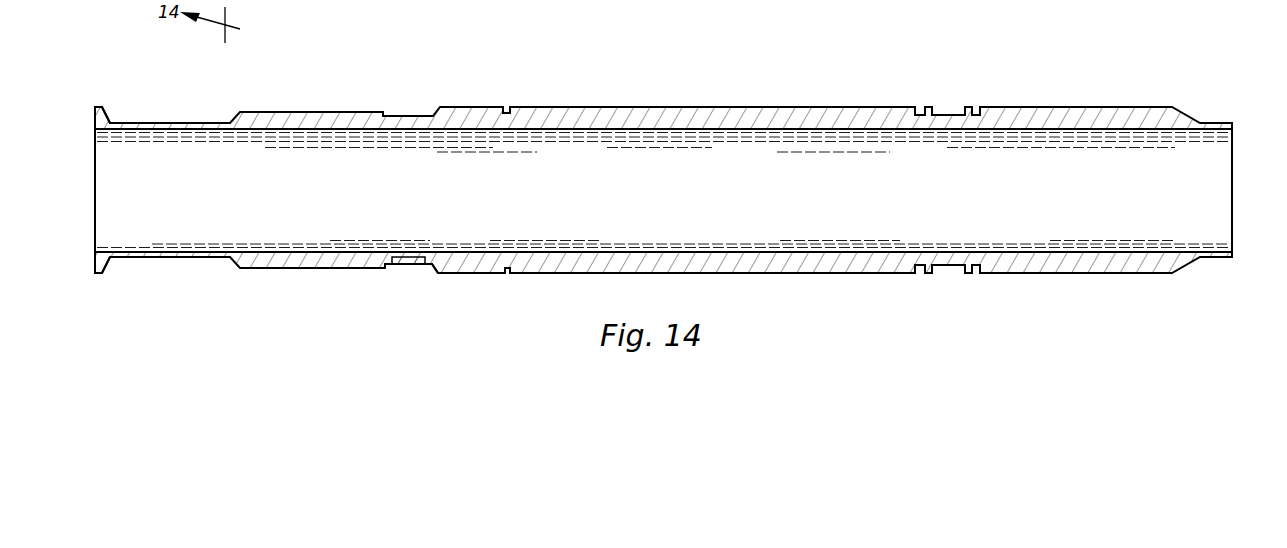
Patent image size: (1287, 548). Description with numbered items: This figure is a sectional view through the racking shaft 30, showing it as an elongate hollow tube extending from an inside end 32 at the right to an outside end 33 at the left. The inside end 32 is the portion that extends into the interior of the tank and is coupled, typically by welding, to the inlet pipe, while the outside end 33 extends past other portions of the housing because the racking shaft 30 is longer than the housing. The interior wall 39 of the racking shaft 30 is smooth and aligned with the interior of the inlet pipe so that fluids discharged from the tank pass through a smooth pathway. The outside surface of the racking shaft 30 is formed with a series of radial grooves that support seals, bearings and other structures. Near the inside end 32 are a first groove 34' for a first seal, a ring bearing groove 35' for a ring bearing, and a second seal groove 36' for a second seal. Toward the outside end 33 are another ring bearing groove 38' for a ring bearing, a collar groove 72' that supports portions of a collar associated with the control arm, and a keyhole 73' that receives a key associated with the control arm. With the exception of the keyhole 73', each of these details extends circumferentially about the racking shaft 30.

The racking shaft 30 is at (856, 78).
The inside end 32 is at (1233, 202).
The outside end 33 is at (113, 215).
The interior wall 39 is at (723, 130).
The collar groove 72' is at (394, 293).
The keyhole 73' is at (423, 288).
The ring bearing groove 38' is at (524, 296).
The second seal groove 36' is at (899, 297).
The ring bearing groove 35' is at (957, 309).
The first groove 34' is at (999, 297).